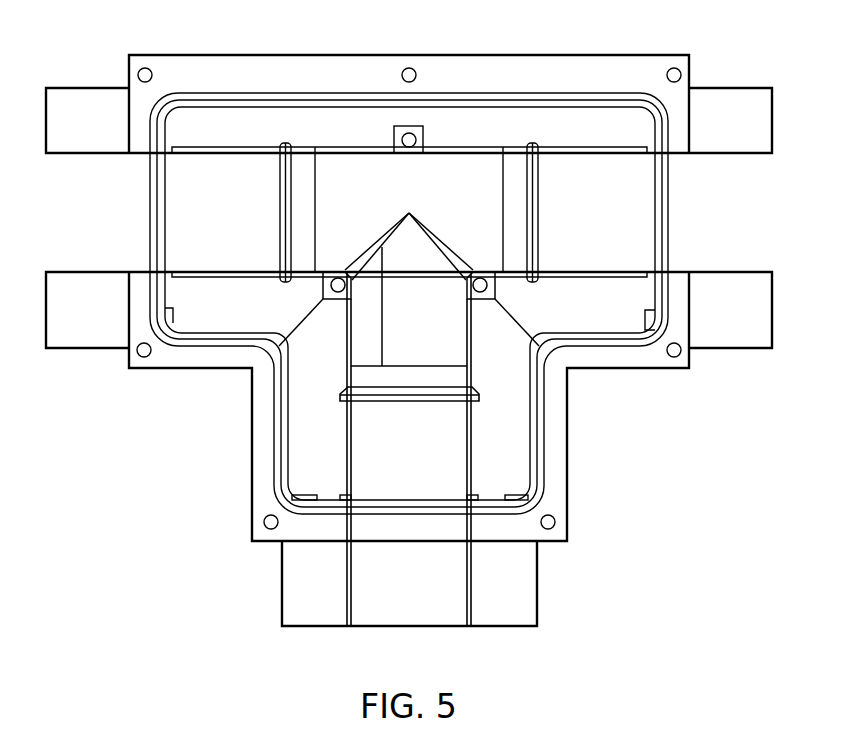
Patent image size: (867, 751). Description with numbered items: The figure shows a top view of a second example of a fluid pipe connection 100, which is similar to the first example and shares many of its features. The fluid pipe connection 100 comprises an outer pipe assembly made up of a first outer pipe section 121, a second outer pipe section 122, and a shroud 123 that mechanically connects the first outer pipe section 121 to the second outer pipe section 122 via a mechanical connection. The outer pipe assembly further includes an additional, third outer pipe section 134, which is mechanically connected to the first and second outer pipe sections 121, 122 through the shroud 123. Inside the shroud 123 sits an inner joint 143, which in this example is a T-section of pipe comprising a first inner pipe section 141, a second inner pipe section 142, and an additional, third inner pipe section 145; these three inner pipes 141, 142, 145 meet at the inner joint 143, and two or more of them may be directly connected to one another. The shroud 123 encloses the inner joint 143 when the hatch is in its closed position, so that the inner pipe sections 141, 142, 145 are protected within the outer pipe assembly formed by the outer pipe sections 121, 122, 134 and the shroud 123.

The fluid pipe connection 100 is at (647, 451).
The first outer pipe section 121 is at (104, 323).
The second outer pipe section 122 is at (724, 337).
The shroud 123 is at (648, 77).
The third outer pipe section 134 is at (524, 575).
The first inner pipe section 141 is at (102, 160).
The second inner pipe section 142 is at (729, 162).
The inner joint 143 is at (368, 318).
The third inner pipe section 145 is at (363, 577).